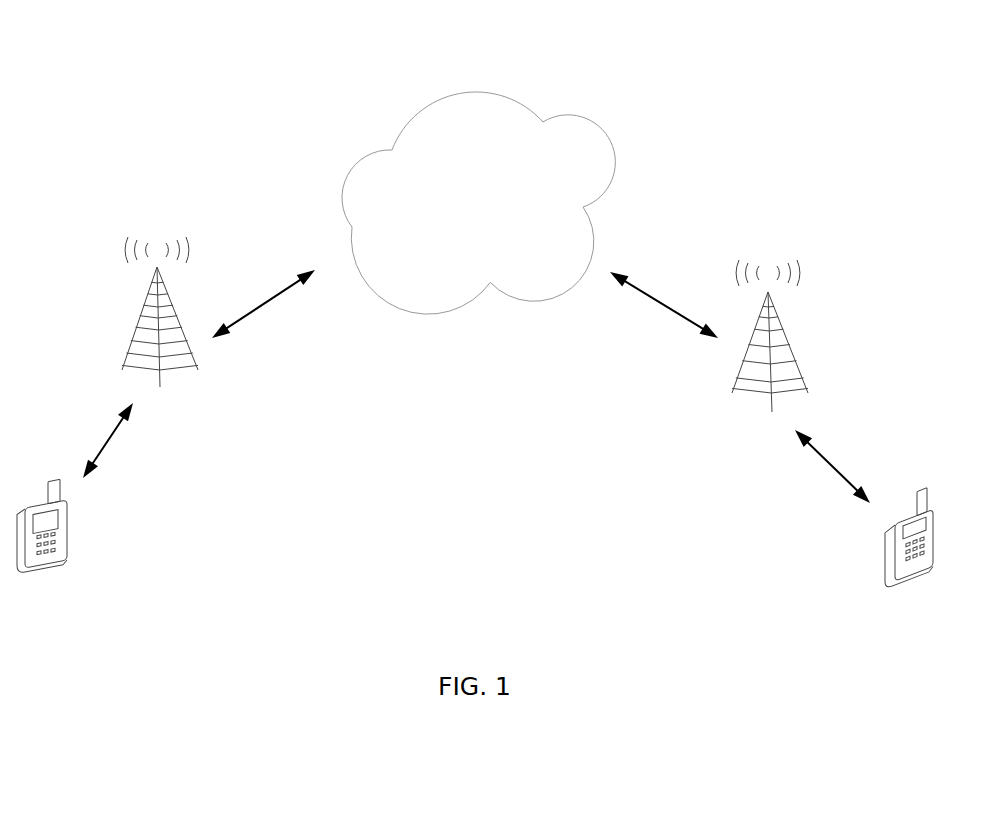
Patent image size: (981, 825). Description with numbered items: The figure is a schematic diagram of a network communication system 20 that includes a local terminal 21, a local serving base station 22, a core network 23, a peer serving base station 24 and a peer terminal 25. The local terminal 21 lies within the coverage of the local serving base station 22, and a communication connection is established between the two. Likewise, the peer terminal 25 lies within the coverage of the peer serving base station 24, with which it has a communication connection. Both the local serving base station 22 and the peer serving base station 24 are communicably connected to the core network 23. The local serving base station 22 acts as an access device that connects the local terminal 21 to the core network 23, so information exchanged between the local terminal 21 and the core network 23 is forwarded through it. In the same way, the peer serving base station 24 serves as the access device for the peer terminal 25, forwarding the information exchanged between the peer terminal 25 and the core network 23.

The network communication system 20 is at (480, 31).
The local terminal 21 is at (60, 535).
The local serving base station 22 is at (180, 352).
The core network 23 is at (440, 297).
The peer serving base station 24 is at (750, 380).
The peer terminal 25 is at (895, 565).